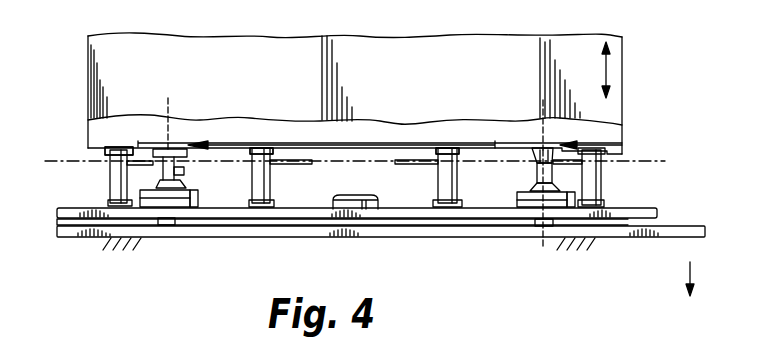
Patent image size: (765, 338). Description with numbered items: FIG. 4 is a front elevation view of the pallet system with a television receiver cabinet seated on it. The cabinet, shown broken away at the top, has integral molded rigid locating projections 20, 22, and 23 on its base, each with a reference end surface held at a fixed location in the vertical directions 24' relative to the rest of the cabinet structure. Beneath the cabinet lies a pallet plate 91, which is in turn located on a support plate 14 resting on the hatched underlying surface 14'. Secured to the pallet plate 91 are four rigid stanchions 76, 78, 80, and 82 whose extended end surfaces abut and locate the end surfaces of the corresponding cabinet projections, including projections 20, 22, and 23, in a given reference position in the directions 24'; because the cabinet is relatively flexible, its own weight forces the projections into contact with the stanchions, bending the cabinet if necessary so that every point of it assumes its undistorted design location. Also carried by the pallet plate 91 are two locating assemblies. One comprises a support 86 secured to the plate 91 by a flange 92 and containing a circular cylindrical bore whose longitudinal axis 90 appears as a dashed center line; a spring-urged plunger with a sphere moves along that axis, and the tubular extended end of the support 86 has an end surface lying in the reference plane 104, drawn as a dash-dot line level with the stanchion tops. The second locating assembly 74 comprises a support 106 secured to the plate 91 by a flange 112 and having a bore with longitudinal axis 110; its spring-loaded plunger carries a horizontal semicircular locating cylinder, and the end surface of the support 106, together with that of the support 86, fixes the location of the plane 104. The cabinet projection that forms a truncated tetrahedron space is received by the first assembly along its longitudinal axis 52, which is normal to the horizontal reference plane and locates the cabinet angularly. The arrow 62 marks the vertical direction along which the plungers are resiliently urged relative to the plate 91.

The support plate 14 is at (381, 248).
The floor surface 14' is at (351, 253).
The locating projection 20 is at (121, 148).
The locating projection 22 is at (265, 147).
The locating projection 23 is at (448, 148).
The vertical directions 24' is at (355, 93).
The longitudinal axis 52 is at (543, 121).
The direction 62 is at (690, 270).
The second locating assembly 74 is at (192, 144).
The stanchion 76 is at (601, 186).
The stanchion 78 is at (110, 188).
The stanchion 80 is at (441, 187).
The stanchion 82 is at (268, 187).
The support 86 is at (537, 180).
The longitudinal axis 90 is at (545, 247).
The pallet plate 91 is at (61, 208).
The flange 92 is at (517, 199).
The reference plane 104 is at (58, 159).
The support 106 is at (173, 185).
The longitudinal axis 110 is at (168, 102).
The flange 112 is at (182, 208).